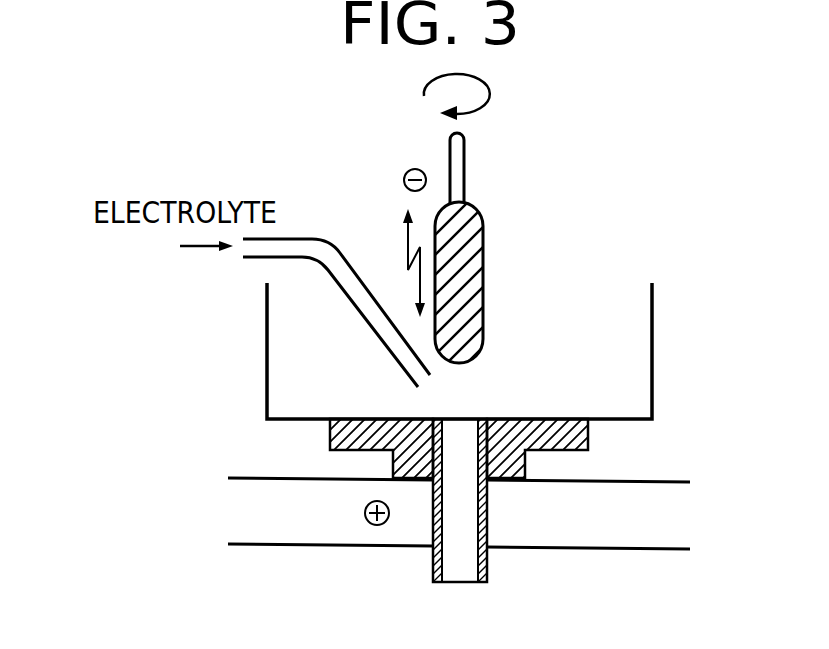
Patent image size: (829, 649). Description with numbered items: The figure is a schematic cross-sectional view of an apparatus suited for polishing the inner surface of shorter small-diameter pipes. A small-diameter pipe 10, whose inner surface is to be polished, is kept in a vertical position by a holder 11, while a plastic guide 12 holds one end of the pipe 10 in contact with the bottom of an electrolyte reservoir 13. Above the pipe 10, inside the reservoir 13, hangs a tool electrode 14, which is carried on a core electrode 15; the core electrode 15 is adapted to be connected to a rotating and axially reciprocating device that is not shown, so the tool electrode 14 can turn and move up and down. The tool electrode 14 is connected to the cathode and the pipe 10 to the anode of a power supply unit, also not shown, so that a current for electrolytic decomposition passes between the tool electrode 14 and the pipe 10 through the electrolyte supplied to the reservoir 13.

The small-diameter pipe 10 is at (489, 513).
The holder 11 is at (262, 530).
The plastic guide 12 is at (589, 433).
The electrolyte reservoir 13 is at (653, 323).
The tool electrode 14 is at (492, 264).
The core electrode 15 is at (464, 150).